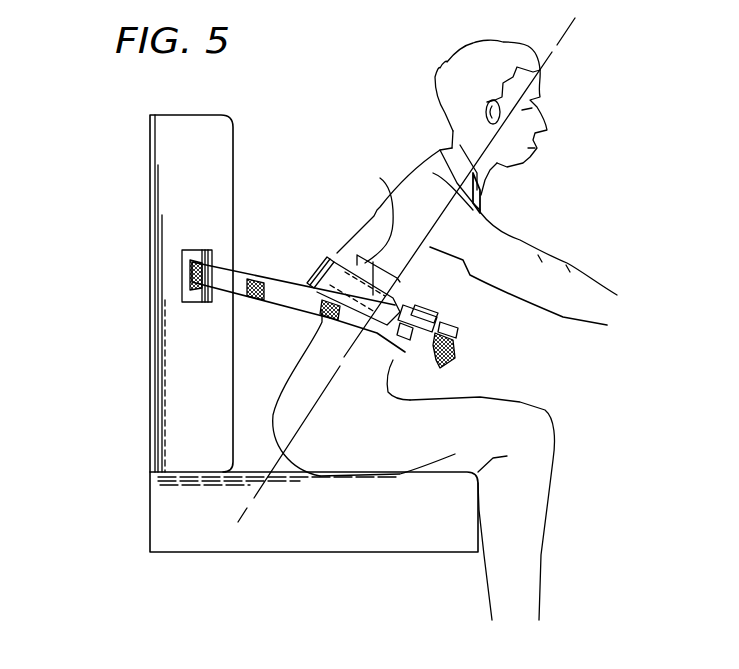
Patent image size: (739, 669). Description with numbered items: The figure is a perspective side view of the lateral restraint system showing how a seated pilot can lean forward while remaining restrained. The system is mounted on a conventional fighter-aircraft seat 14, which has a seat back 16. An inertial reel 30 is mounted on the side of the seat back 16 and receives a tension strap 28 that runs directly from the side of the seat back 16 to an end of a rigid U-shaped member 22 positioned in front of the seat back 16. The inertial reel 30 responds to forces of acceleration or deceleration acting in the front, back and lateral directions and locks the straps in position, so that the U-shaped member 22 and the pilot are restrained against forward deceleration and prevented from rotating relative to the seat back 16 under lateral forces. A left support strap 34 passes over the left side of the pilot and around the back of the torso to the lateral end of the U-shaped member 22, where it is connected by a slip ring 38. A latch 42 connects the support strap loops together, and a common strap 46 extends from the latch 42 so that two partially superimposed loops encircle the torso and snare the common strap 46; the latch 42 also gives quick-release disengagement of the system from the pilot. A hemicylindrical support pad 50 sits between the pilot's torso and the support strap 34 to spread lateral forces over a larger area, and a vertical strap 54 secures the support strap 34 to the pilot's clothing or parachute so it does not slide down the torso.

The seat 14 is at (150, 522).
The seat back 16 is at (150, 197).
The U-shaped member 22 is at (315, 268).
The tension strap 28 is at (290, 306).
The inertial reel 30 is at (183, 283).
The left support strap 34 is at (380, 347).
The slip ring 38 is at (440, 316).
The latch 42 is at (460, 341).
The common strap 46 is at (460, 334).
The hemicylindrical support pad 50 is at (380, 178).
The vertical strap 54 is at (403, 358).